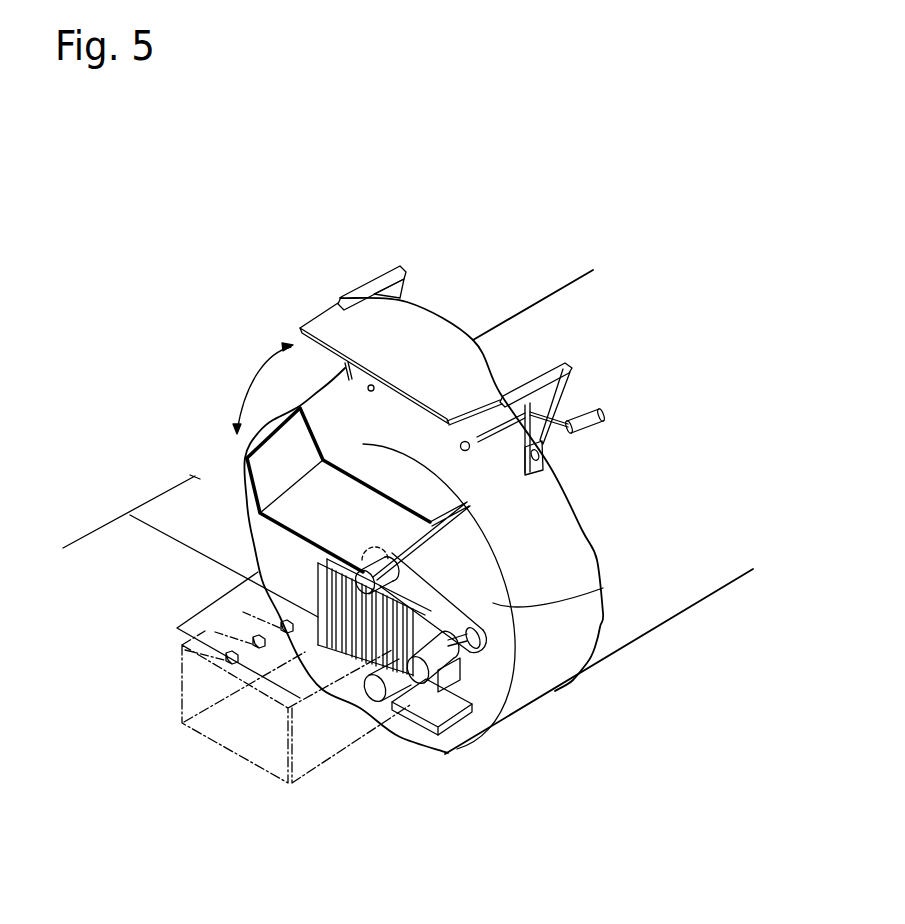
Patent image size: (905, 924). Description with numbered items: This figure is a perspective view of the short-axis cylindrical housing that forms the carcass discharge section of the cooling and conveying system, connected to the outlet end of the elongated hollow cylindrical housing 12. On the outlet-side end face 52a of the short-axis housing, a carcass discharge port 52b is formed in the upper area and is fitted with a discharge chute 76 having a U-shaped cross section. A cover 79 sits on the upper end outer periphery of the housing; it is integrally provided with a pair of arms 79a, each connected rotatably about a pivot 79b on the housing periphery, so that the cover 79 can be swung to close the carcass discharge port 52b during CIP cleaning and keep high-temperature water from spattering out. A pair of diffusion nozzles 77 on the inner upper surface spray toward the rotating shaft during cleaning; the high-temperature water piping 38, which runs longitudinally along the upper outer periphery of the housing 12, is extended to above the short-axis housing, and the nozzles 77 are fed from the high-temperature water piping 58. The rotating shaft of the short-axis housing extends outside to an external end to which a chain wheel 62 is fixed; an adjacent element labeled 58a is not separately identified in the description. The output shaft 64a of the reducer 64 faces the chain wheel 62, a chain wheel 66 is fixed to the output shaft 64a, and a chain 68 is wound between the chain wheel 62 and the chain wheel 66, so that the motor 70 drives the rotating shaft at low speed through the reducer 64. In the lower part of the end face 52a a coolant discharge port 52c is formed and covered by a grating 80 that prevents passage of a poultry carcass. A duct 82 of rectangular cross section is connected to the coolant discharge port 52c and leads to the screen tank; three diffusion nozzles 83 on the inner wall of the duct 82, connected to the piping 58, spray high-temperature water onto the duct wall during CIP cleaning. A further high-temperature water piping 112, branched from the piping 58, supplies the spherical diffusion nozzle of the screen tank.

The hollow cylindrical housing 12 is at (657, 628).
The high-temperature water piping 38 is at (585, 436).
The outlet-side end face 52a is at (603, 588).
The carcass discharge port 52b is at (246, 455).
The coolant discharge port 52c is at (316, 592).
The high-temperature water piping 58 is at (152, 496).
The shaft 58a is at (365, 568).
The chain wheel 62 is at (400, 582).
The reducer 64 is at (447, 662).
The output shaft 64a is at (468, 684).
The chain wheel 66 is at (488, 642).
The chain 68 is at (443, 588).
The motor 70 is at (373, 700).
The discharge chute 76 is at (480, 524).
The diffusion nozzles 77 is at (362, 387).
The cover 79 is at (324, 322).
The arms 79a is at (377, 284).
The pivot 79b is at (544, 456).
The grating 80 is at (313, 642).
The duct 82 is at (236, 757).
The diffusion nozzles 83 is at (226, 659).
The high-temperature water piping 112 is at (89, 535).